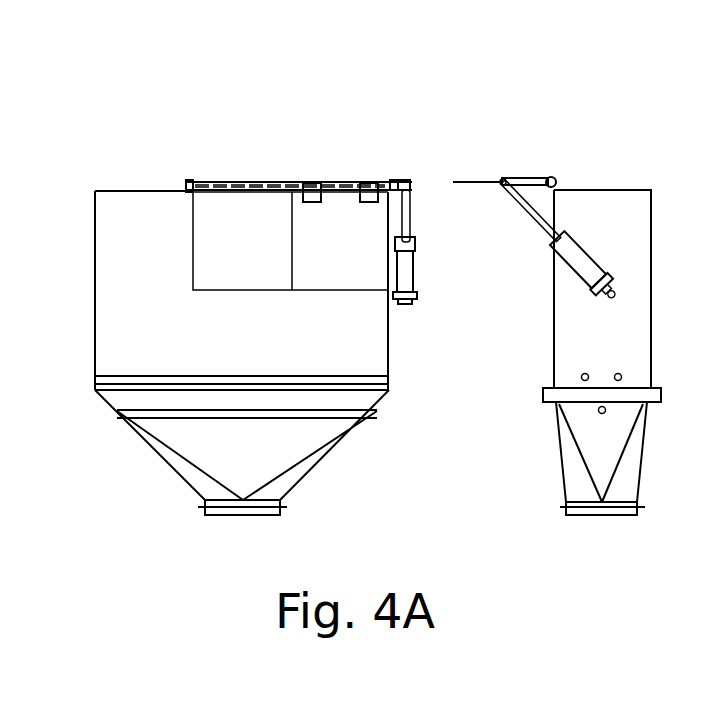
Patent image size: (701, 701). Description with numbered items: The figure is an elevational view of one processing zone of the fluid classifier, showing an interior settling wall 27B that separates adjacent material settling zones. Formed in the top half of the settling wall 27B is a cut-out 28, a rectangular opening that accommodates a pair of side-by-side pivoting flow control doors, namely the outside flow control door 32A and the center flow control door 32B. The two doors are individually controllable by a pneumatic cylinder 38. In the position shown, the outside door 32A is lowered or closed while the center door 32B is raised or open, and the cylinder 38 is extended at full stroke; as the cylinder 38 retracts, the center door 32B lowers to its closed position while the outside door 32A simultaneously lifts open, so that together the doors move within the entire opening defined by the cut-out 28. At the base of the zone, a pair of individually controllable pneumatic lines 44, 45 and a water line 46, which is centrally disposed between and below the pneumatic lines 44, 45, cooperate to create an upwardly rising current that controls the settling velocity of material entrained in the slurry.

The interior settling wall 27B is at (181, 346).
The cut-out 28 is at (193, 227).
The center flow control door 32B is at (333, 218).
The outside flow control door 32A is at (477, 182).
The pneumatic cylinder 38 is at (575, 261).
The pneumatic line 44 is at (581, 377).
The pneumatic line 45 is at (622, 377).
The water line 46 is at (602, 414).